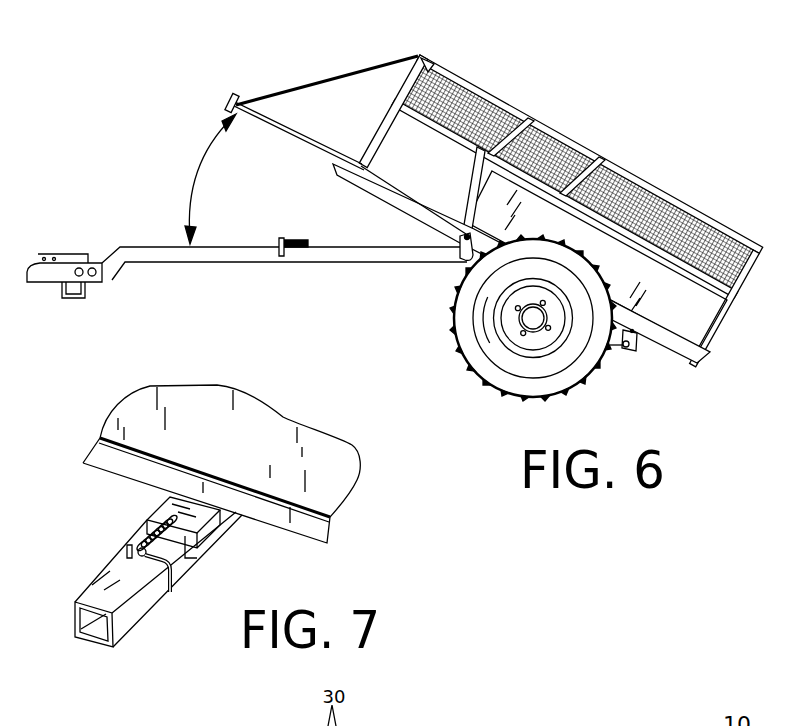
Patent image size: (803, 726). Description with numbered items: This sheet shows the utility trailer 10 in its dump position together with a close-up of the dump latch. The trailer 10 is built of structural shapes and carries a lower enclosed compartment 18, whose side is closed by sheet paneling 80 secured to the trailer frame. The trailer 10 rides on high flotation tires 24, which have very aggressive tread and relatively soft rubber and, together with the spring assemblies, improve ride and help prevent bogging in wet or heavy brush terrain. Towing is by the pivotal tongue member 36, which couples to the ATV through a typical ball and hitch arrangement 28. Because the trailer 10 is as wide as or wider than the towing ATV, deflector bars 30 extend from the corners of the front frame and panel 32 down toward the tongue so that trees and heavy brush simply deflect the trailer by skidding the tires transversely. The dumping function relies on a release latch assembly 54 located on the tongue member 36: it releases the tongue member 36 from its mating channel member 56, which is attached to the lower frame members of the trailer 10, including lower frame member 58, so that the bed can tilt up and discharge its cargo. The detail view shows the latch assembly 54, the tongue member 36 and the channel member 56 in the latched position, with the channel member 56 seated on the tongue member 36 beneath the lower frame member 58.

In FIG. 6, the utility trailer 10 is at (574, 84).
In FIG. 6, the lower enclosed compartment 18 is at (716, 199).
In FIG. 6, the high flotation tires 24 is at (583, 388).
In FIG. 6, the ball and hitch arrangement 28 is at (60, 242).
In FIG. 6, the deflector bars 30 is at (283, 128).
In FIG. 7, the front frame and panel 32 is at (240, 456).
In FIG. 6, the pivotal tongue member 36 is at (147, 246).
In FIG. 7, the pivotal tongue member 36 is at (128, 616).
In FIG. 6, the release latch assembly 54 is at (298, 240).
In FIG. 7, the release latch assembly 54 is at (121, 546).
In FIG. 6, the channel member 56 is at (407, 213).
In FIG. 7, the channel member 56 is at (158, 509).
In FIG. 7, the lower frame member 58 is at (128, 445).
In FIG. 6, the side paneling 80 is at (660, 313).